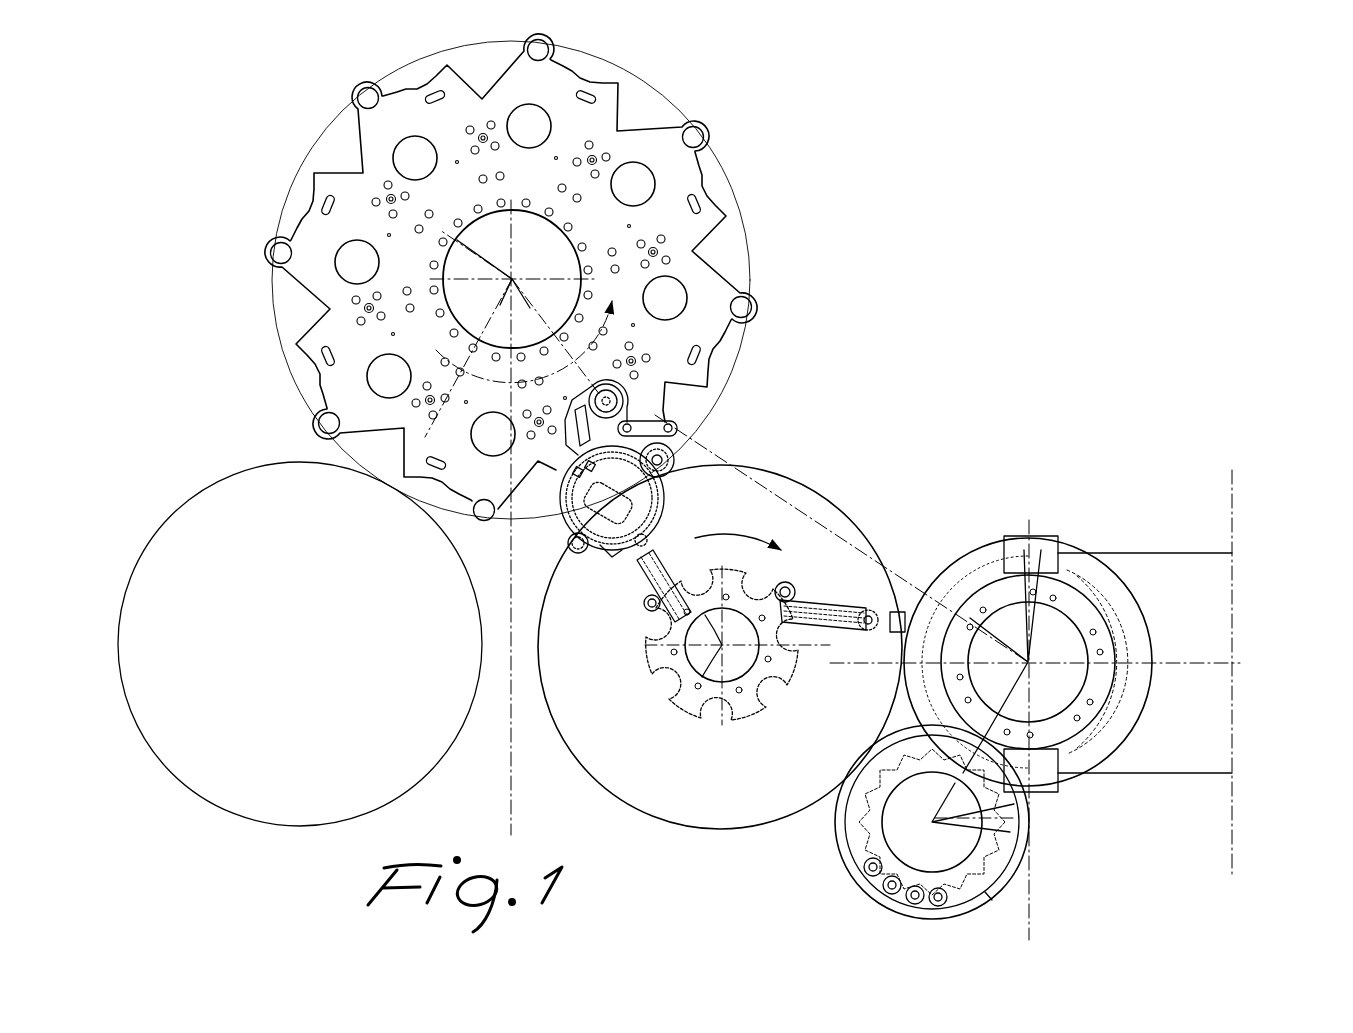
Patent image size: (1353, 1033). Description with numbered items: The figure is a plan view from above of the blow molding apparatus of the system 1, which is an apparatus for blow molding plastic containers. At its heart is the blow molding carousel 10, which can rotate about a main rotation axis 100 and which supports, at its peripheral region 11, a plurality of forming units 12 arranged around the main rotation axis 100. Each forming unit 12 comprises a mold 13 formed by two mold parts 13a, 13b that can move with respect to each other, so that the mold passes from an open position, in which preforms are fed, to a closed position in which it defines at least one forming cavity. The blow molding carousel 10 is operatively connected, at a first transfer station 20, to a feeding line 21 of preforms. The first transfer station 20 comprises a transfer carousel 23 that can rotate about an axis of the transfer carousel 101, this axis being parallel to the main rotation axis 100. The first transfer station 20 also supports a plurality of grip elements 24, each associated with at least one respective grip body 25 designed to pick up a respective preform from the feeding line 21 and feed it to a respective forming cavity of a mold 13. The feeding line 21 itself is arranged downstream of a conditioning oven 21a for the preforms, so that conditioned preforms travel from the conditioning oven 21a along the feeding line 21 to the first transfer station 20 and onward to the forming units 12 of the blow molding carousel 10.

The system 1 is at (732, 484).
The blow molding carousel 10 is at (728, 138).
The peripheral region 11 is at (718, 183).
The main rotation axis 100 is at (440, 233).
The forming unit 12 is at (557, 500).
The mold 13 is at (553, 537).
The mold part 13a is at (675, 470).
The mold part 13b is at (563, 510).
The first transfer station 20 is at (753, 430).
The feeding line 21 is at (1067, 533).
The conditioning oven 21a is at (1265, 580).
The transfer carousel 23 is at (841, 526).
The grip element 24 is at (637, 590).
The grip body 25 is at (598, 563).
The axis of the transfer carousel 101 is at (700, 690).